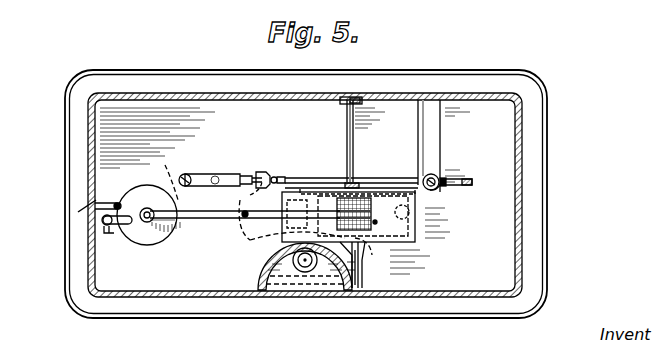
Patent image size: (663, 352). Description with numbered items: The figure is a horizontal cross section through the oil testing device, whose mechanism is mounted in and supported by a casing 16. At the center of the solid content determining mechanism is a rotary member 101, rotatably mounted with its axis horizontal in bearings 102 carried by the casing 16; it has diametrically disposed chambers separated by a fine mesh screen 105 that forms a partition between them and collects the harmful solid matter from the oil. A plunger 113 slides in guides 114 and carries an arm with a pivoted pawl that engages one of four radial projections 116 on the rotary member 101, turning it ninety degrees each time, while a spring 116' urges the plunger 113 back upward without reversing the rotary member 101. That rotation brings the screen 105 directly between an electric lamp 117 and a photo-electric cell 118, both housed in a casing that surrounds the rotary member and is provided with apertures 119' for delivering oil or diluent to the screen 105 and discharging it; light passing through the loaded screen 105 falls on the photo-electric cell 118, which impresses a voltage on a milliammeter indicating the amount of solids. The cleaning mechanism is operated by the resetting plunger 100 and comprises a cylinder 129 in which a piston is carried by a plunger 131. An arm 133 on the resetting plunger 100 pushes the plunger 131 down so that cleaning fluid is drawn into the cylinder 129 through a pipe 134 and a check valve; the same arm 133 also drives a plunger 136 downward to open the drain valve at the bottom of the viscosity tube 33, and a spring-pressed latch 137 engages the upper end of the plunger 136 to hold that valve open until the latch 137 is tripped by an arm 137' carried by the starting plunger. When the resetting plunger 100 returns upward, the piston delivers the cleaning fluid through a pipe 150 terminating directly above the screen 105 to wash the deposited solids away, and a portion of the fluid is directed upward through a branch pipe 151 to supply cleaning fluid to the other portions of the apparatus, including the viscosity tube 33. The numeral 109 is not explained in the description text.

The casing 16 is at (518, 178).
The viscosity tube 33 is at (316, 268).
The resetting plunger 100 is at (184, 177).
The rotary member 101 is at (350, 165).
The bearings 102 is at (353, 97).
The fine mesh screen 105 is at (362, 226).
The push rod 109 is at (96, 203).
The plunger 113 is at (439, 180).
The guides 114 is at (436, 129).
The radial projections 116 is at (351, 174).
The spring 116' is at (460, 200).
The electric lamp 117 is at (410, 212).
The photo-electric cell 118 is at (265, 245).
The apertures 119' is at (364, 228).
The cylinder 129 is at (152, 238).
The plunger 131 is at (198, 176).
The arm 133 is at (230, 176).
The pipe 134 is at (116, 236).
The plunger 136 is at (270, 250).
The spring-pressed latch 137 is at (270, 168).
The arm 137' is at (475, 176).
The pipe 150 is at (190, 222).
The branch pipe 151 is at (238, 219).